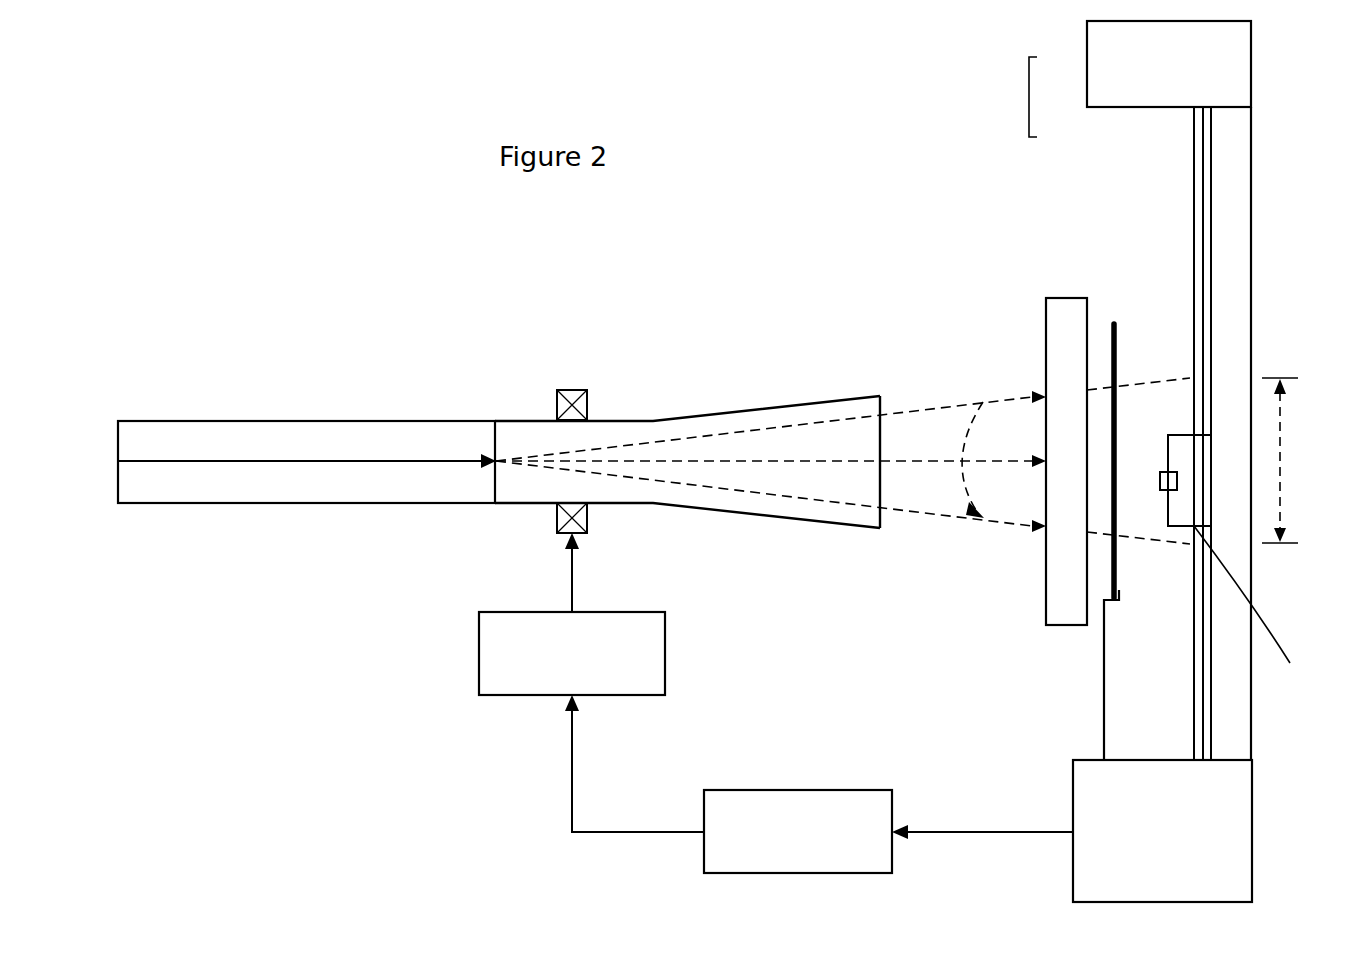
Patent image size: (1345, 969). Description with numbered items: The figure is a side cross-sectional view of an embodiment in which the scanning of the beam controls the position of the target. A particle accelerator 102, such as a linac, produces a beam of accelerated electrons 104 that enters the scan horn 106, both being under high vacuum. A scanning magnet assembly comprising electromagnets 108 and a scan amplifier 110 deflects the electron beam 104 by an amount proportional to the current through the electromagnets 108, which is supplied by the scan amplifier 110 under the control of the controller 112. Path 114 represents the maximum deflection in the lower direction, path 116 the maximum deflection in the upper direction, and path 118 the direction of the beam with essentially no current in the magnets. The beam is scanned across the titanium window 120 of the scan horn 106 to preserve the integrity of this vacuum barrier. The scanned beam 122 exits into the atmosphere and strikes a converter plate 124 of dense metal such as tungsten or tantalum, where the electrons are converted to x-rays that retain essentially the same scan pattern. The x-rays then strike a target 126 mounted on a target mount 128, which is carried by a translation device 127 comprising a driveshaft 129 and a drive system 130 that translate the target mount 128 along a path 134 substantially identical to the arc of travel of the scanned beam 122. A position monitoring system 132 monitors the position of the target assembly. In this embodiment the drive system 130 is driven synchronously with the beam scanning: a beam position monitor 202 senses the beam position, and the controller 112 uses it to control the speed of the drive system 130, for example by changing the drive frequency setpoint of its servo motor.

The particle accelerator 102 is at (338, 420).
The beam of accelerated electrons 104 is at (381, 462).
The scan horn 106 is at (692, 346).
The electromagnets 108 is at (573, 390).
The scan amplifier 110 is at (572, 614).
The controller 112 is at (819, 784).
The path of maximum lower deflection 114 is at (763, 499).
The path of maximum upper deflection 116 is at (703, 432).
The undeflected beam path 118 is at (868, 462).
The titanium window 120 is at (883, 488).
The scanned beam 122 is at (1002, 420).
The converter plate 124 is at (1057, 298).
The target 126 is at (1185, 435).
The translation device 127 is at (1029, 95).
The target mount 128 is at (1248, 608).
The driveshaft 129 is at (1192, 158).
The drive system 130 is at (1087, 71).
The position monitoring system 132 is at (1162, 831).
The path of target translation 134 is at (1283, 417).
The beam position monitor 202 is at (1122, 550).